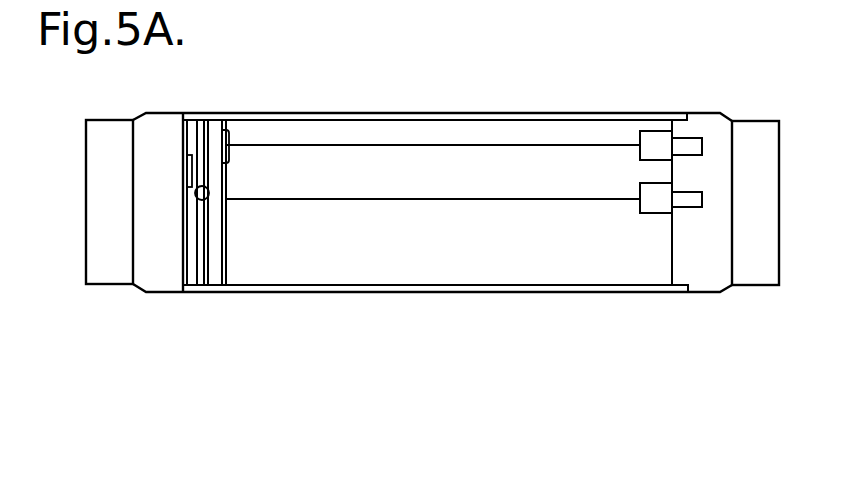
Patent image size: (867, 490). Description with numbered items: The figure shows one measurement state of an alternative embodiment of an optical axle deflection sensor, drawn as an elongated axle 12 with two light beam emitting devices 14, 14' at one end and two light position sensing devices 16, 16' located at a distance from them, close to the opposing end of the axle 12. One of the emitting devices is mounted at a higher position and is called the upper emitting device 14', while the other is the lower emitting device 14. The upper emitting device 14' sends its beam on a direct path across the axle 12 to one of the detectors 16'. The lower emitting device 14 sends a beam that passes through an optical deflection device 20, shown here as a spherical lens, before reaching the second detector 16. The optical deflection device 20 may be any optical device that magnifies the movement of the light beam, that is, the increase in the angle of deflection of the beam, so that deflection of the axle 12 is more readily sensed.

The axle 12 is at (427, 112).
The light beam emitting device 14 is at (647, 276).
The upper light beam emitting device 14' is at (671, 103).
The light position sensing device 16 is at (168, 184).
The light position sensing device 16' is at (233, 106).
The optical deflection device 20 is at (206, 198).